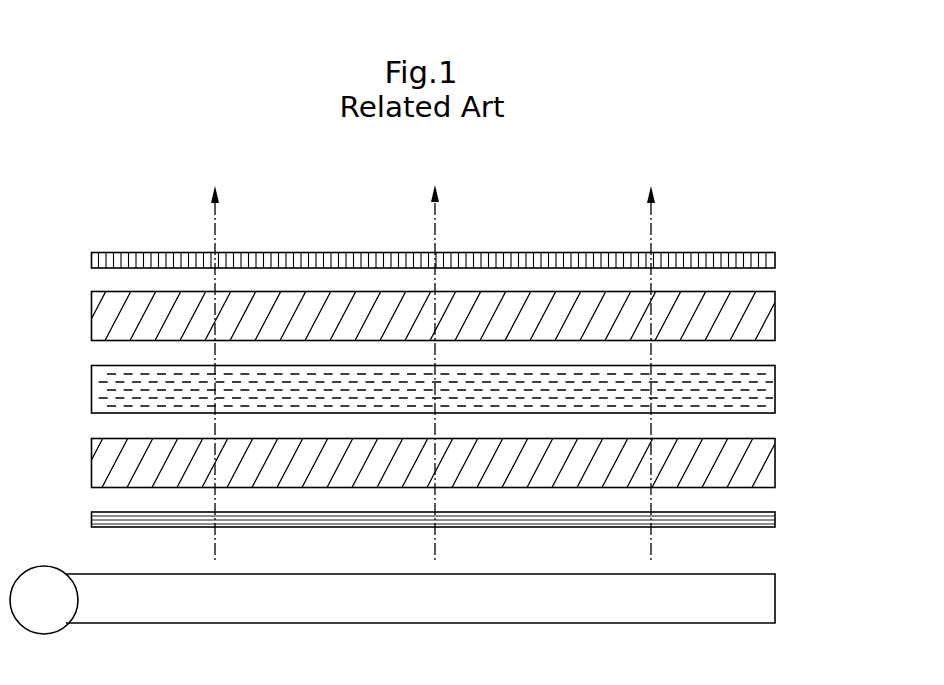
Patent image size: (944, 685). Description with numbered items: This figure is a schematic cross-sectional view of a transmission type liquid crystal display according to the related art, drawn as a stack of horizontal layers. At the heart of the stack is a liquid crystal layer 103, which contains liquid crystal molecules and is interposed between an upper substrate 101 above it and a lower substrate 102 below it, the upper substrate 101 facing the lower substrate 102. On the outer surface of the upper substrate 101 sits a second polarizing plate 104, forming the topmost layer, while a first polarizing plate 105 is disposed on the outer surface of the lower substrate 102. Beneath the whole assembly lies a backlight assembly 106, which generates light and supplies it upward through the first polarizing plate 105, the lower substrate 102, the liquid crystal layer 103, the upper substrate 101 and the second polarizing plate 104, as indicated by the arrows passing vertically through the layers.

The upper substrate 101 is at (775, 315).
The lower substrate 102 is at (775, 461).
The liquid crystal layer 103 is at (775, 387).
The second polarizing plate 104 is at (775, 260).
The first polarizing plate 105 is at (775, 517).
The backlight assembly 106 is at (775, 598).